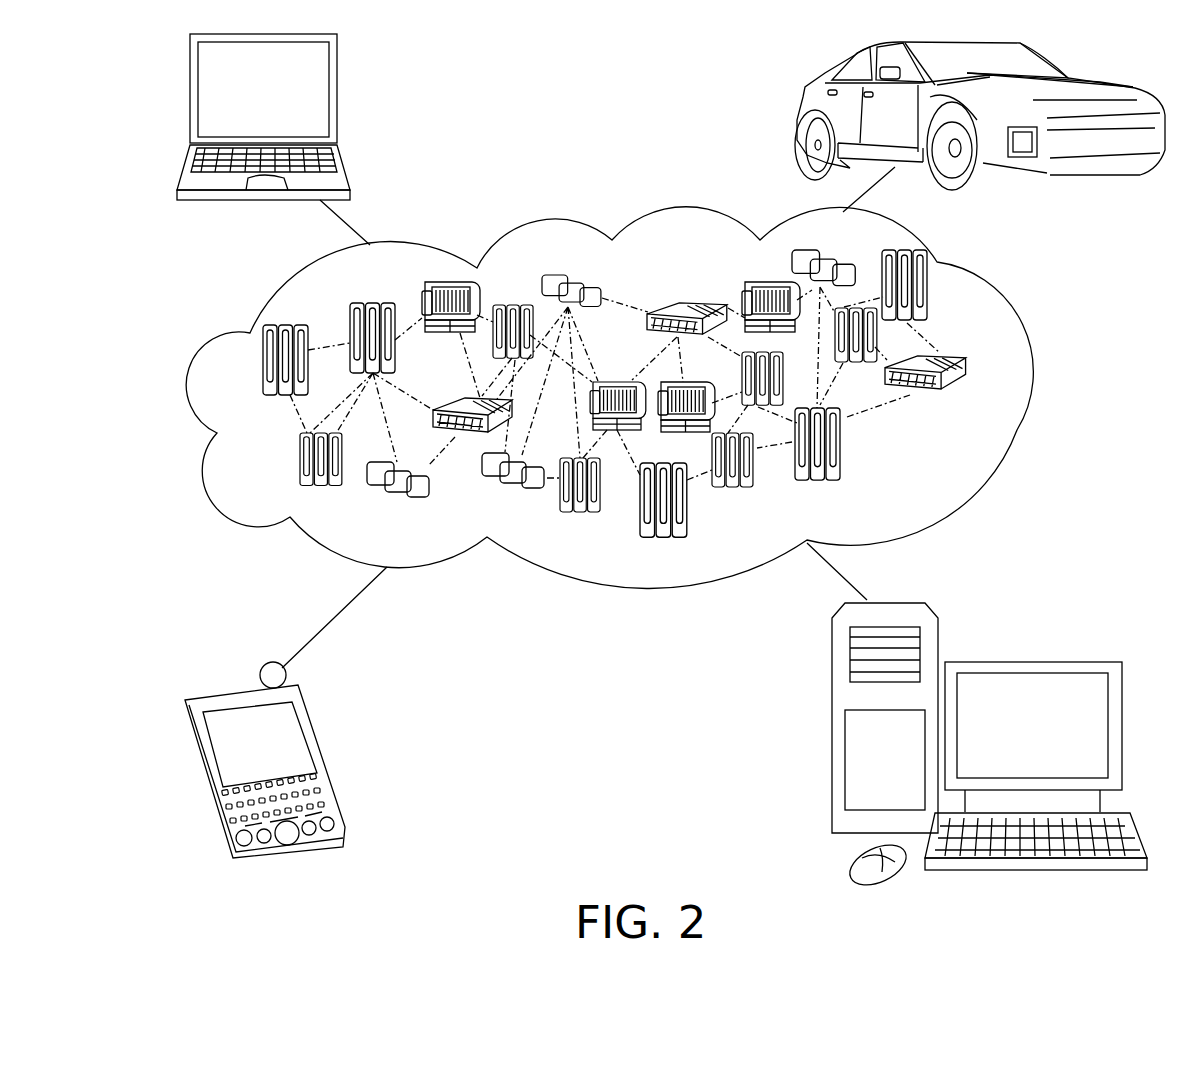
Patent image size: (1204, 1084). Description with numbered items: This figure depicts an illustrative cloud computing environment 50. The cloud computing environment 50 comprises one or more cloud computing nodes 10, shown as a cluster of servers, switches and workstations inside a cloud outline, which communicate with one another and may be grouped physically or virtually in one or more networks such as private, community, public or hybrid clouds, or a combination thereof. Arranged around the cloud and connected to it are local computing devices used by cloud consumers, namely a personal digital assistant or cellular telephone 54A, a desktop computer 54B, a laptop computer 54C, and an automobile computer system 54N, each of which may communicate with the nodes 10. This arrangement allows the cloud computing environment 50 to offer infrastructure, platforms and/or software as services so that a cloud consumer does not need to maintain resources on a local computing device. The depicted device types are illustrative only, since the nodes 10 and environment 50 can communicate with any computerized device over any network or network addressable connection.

The cloud computing environment 50 is at (1033, 372).
The cloud computing nodes 10 is at (978, 401).
The personal digital assistant or cellular telephone 54A is at (327, 752).
The desktop computer 54B is at (1032, 662).
The laptop computer 54C is at (337, 97).
The automobile computer system 54N is at (800, 115).